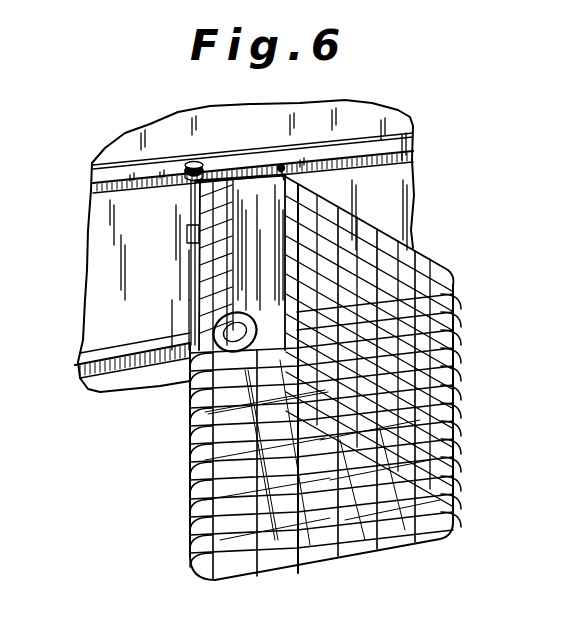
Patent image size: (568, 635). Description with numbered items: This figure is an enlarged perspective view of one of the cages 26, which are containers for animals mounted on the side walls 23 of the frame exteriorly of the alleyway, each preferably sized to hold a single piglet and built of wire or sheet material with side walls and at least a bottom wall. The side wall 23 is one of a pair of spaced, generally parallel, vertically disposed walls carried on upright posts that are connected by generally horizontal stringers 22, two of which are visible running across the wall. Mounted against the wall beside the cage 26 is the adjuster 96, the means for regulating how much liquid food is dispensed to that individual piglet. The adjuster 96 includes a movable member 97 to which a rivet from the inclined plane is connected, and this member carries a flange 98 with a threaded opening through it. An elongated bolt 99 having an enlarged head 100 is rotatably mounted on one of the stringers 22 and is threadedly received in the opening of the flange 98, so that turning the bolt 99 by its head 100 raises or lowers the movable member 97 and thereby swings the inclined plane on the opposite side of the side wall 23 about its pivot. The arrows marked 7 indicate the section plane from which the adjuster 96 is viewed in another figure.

The section line 7- 7 is at (193, 135).
The stringers 22 is at (100, 185).
The side walls 23 is at (373, 97).
The cages 26 is at (497, 238).
The adjuster 96 is at (188, 267).
The movable member 97 is at (188, 286).
The flange 98 is at (187, 237).
The elongated bolt 99 is at (190, 198).
The enlarged head 100 is at (200, 162).